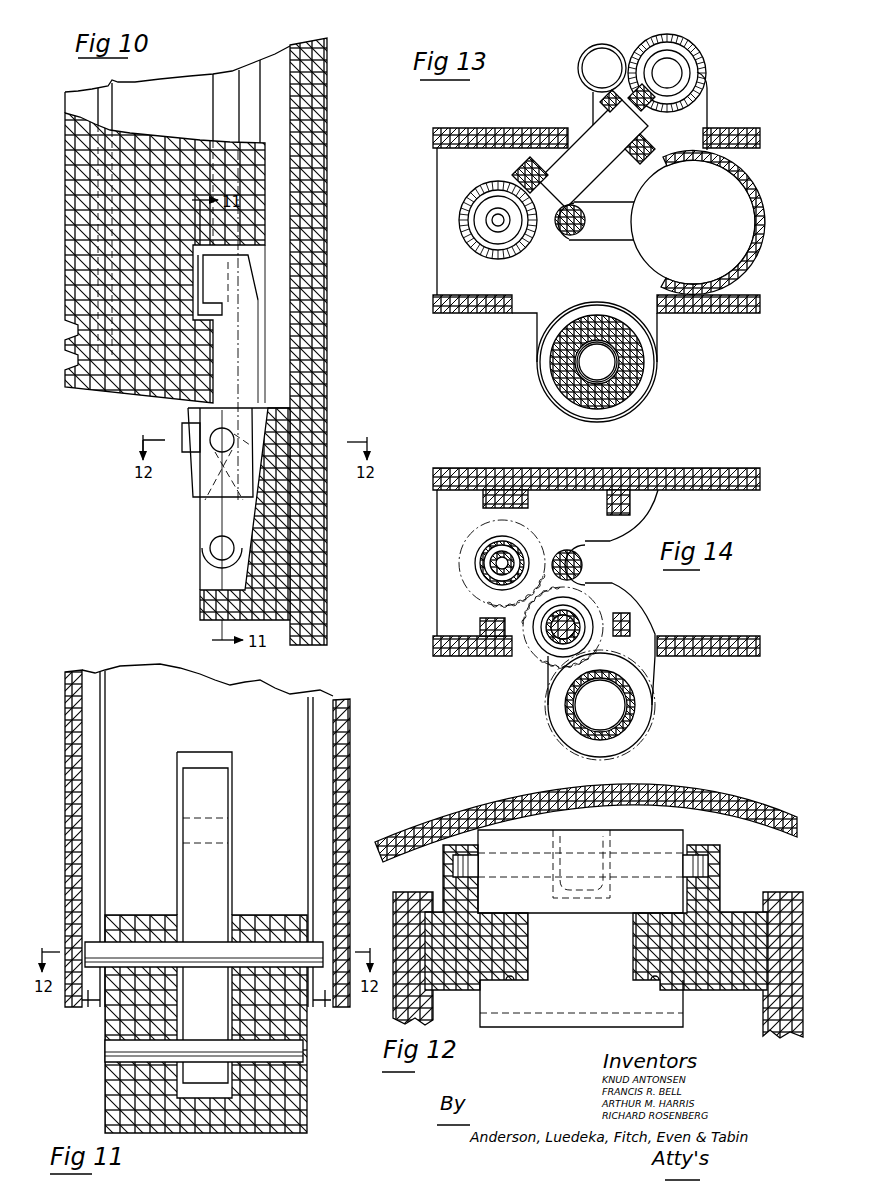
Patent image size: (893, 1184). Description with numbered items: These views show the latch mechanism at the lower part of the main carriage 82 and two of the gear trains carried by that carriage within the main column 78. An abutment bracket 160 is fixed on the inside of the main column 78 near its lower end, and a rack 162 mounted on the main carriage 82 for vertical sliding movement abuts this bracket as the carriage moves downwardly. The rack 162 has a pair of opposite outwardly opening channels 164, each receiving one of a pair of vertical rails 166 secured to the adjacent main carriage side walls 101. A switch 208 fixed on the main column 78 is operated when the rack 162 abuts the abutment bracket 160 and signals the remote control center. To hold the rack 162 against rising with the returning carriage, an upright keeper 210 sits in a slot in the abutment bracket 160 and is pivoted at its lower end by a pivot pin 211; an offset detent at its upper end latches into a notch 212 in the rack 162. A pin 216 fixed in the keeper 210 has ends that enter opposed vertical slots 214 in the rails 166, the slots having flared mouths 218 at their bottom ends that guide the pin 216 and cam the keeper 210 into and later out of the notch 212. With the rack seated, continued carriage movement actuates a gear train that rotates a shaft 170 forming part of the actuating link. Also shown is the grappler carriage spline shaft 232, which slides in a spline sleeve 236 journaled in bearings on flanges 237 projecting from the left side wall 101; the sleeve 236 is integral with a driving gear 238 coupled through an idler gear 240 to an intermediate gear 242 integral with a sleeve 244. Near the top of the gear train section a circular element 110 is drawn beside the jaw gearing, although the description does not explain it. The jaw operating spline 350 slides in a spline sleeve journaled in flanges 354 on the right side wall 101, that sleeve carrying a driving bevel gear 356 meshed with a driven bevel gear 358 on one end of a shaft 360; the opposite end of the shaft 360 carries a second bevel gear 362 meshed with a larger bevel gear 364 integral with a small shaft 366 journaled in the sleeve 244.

In FIG. 10, the main column 78 is at (330, 385).
In FIG. 12, the main column 78 is at (421, 829).
In FIG. 13, the main carriage 82 is at (725, 128).
In FIG. 14, the main carriage 82 is at (663, 470).
In FIG. 10, the main carriage side walls 101 is at (85, 95).
In FIG. 11, the main carriage side walls 101 is at (70, 742).
In FIG. 12, the main carriage side walls 101 is at (400, 918).
In FIG. 13, the main carriage side walls 101 is at (458, 128).
In FIG. 14, the main carriage side walls 101 is at (458, 470).
In FIG. 13, the drive shaft 110 is at (587, 53).
In FIG. 10, the abutment bracket 160 is at (280, 503).
In FIG. 11, the abutment bracket 160 is at (118, 1022).
In FIG. 10, the rack 162 is at (90, 222).
In FIG. 11, the rack 162 is at (135, 707).
In FIG. 12, the rack 162 is at (576, 1017).
In FIG. 12, the channels 164 is at (510, 982).
In FIG. 10, the vertical rails 166 is at (172, 84).
In FIG. 12, the vertical rails 166 is at (470, 972).
In FIG. 13, the shaft 170 is at (586, 216).
In FIG. 14, the shaft 170 is at (583, 565).
In FIG. 10, the switch 208 is at (182, 438).
In FIG. 10, the keeper 210 is at (262, 338).
In FIG. 11, the keeper 210 is at (200, 866).
In FIG. 12, the keeper 210 is at (605, 837).
In FIG. 10, the pivot pin 211 is at (212, 552).
In FIG. 11, the pivot pin 211 is at (118, 1050).
In FIG. 10, the notch 212 is at (233, 372).
In FIG. 11, the notch 212 is at (196, 840).
In FIG. 10, the vertical slots 214 is at (226, 72).
In FIG. 11, the vertical slots 214 is at (93, 678).
In FIG. 12, the vertical slots 214 is at (453, 868).
In FIG. 10, the pin 216 is at (234, 440).
In FIG. 11, the pin 216 is at (103, 948).
In FIG. 12, the pin 216 is at (690, 860).
In FIG. 10, the flared mouths 218 is at (203, 507).
In FIG. 11, the flared mouths 218 is at (88, 1005).
In FIG. 13, the grappler carriage spline shaft 232 is at (580, 378).
In FIG. 13, the spline sleeve 236 is at (558, 365).
In FIG. 14, the spline sleeve 236 is at (573, 718).
In FIG. 13, the flanges 237 is at (583, 420).
In FIG. 14, the flanges 237 is at (615, 742).
In FIG. 14, the driving gear 238 is at (565, 690).
In FIG. 14, the idler gear 240 is at (542, 655).
In FIG. 14, the intermediate gear 242 is at (470, 585).
In FIG. 14, the sleeve 244 is at (480, 565).
In FIG. 13, the jaw operating spline 350 is at (690, 60).
In FIG. 13, the flanges 354 is at (697, 107).
In FIG. 13, the driving bevel gear 356 is at (688, 42).
In FIG. 13, the driven bevel gear 358 is at (650, 112).
In FIG. 13, the shaft 360 is at (595, 137).
In FIG. 13, the second bevel gear 362 is at (514, 185).
In FIG. 13, the larger bevel gear 364 is at (458, 216).
In FIG. 13, the small shaft 366 is at (496, 230).